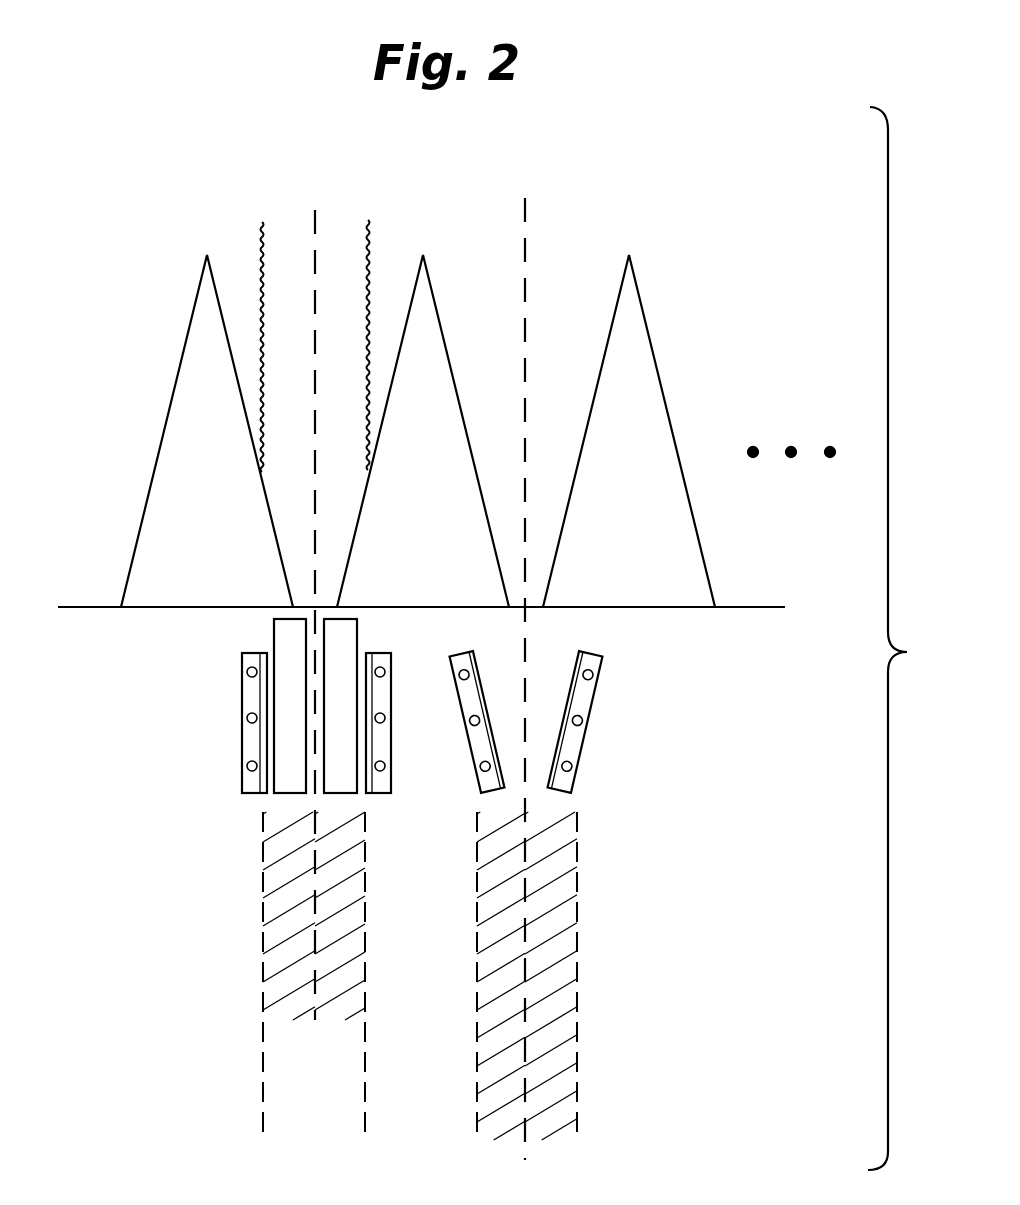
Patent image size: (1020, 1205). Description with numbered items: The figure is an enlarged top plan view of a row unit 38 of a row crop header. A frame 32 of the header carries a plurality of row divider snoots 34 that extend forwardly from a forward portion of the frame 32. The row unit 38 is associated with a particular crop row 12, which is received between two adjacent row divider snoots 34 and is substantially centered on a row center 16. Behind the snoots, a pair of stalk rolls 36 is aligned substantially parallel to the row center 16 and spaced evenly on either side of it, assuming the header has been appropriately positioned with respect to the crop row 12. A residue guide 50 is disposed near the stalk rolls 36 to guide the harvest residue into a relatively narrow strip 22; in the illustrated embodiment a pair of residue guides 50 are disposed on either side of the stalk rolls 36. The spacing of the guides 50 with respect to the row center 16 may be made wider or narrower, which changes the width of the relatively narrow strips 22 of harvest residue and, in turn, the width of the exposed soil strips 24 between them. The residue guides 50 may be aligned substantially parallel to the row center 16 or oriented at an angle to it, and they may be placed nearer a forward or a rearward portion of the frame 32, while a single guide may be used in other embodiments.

The crop row 12 is at (258, 238).
The row center 16 is at (316, 215).
The relatively narrow strip 22 is at (365, 1122).
The exposed soil strip 24 is at (477, 1070).
The frame 32 is at (755, 606).
The row divider snoot 34 is at (200, 358).
The stalk roll 36 is at (285, 632).
The row unit 38 is at (237, 187).
The residue guide 50 is at (240, 690).